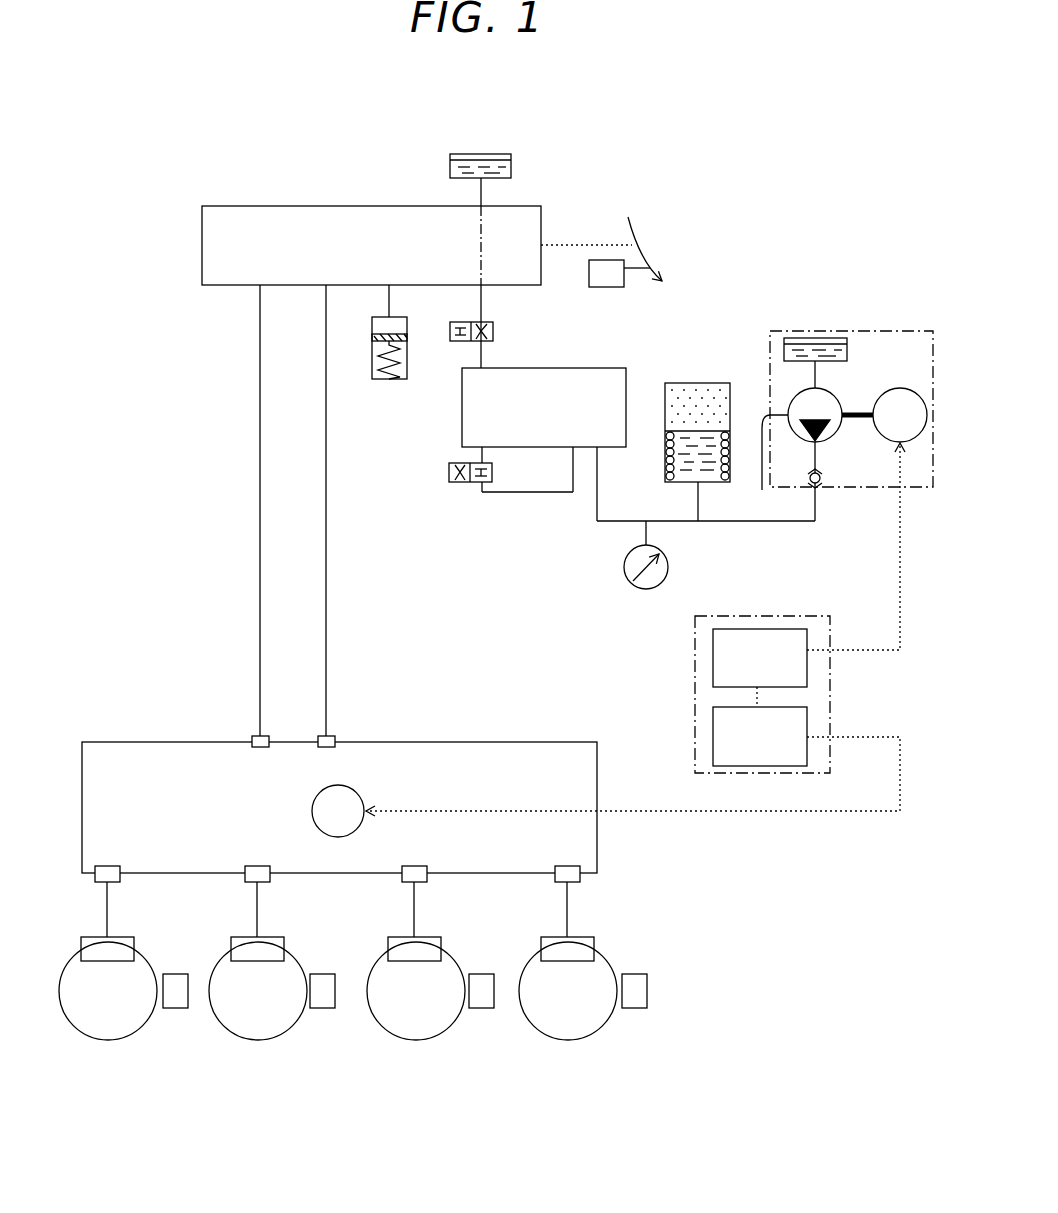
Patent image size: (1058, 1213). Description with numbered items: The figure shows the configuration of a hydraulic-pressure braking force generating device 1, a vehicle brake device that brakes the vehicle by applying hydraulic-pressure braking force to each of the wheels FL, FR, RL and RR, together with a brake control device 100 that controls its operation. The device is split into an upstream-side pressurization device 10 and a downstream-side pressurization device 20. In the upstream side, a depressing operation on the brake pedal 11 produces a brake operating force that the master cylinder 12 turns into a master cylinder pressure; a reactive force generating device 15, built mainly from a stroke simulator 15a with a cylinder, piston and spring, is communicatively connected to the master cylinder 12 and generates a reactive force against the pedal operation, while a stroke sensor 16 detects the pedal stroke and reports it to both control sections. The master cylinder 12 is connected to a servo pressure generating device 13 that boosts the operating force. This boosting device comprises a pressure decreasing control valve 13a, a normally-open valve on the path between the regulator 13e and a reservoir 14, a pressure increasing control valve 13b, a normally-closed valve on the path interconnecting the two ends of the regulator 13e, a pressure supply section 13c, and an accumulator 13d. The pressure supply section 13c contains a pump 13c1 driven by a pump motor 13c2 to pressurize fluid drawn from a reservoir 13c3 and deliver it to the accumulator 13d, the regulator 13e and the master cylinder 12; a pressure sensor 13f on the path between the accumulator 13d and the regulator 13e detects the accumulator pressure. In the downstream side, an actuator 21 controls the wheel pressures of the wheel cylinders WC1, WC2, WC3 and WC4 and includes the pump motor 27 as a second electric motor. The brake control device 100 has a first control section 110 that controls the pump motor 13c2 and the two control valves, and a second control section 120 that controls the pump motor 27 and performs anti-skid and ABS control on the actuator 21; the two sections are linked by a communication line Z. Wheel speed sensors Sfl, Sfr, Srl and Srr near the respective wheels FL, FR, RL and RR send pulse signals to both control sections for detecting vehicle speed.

The hydraulic-pressure braking force generating device 1 is at (152, 92).
The upstream-side pressurization device 10 is at (253, 150).
The brake pedal 11 is at (634, 232).
The master cylinder 12 is at (213, 206).
The servo pressure generating device 13 is at (822, 259).
The pressure decreasing control valve 13a is at (494, 332).
The pressure increasing control valve 13b is at (467, 483).
The pressure supply section 13c is at (847, 306).
The pump 13c1 is at (791, 454).
The pump motor 13c2 is at (902, 388).
The reservoir 13c3 is at (783, 351).
The accumulator 13d is at (694, 383).
The regulator 13e is at (574, 368).
The pressure sensor 13f is at (668, 567).
The reservoir 14 is at (511, 165).
The reactive force generating device 15 is at (375, 372).
The stroke simulator 15a is at (387, 381).
The stroke sensor 16 is at (605, 287).
The downstream-side pressurization device 20 is at (145, 697).
The actuator 21 is at (440, 742).
The pump motor 27 is at (340, 786).
The brake control device 100 is at (630, 630).
The first control section 110 is at (713, 656).
The second control section 120 is at (713, 738).
The communication line Z is at (757, 697).
The wheel cylinder WC1 is at (90, 937).
The wheel cylinder WC2 is at (240, 937).
The wheel cylinder WC3 is at (398, 937).
The wheel cylinder WC4 is at (552, 937).
The wheel FL is at (107, 1041).
The wheel FR is at (257, 1041).
The wheel RL is at (415, 1041).
The wheel RR is at (567, 1041).
The wheel speed sensor Sfl is at (175, 1009).
The wheel speed sensor Sfr is at (322, 1009).
The wheel speed sensor Srl is at (481, 1009).
The wheel speed sensor Srr is at (634, 1009).